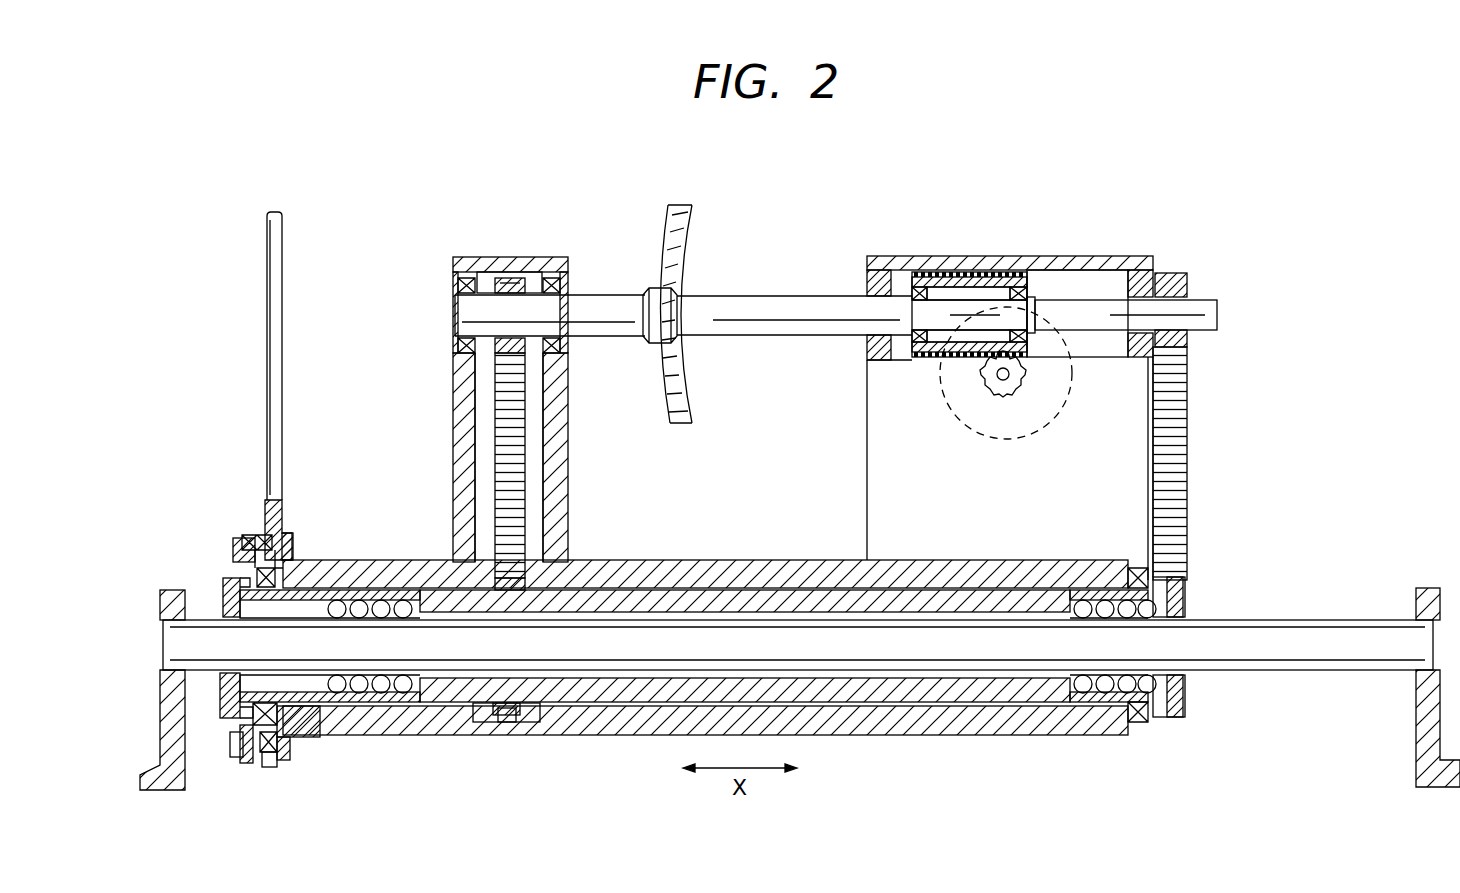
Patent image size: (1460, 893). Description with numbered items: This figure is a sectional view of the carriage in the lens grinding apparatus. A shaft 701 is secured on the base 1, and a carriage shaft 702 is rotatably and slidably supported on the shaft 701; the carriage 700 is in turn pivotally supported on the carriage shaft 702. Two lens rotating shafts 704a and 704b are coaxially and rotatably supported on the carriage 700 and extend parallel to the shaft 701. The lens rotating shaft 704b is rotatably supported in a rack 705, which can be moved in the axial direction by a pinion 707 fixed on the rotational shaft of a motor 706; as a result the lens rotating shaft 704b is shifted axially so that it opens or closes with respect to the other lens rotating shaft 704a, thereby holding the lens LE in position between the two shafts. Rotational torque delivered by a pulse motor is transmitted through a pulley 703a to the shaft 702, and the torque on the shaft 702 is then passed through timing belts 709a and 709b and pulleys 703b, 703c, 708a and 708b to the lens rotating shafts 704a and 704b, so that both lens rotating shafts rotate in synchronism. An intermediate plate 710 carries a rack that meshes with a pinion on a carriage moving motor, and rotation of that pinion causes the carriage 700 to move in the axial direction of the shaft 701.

The base 1 is at (170, 590).
The carriage 700 is at (1082, 256).
The shaft 701 is at (1316, 627).
The carriage shaft 702 is at (1158, 597).
The pulley 703a is at (225, 705).
The pulley 703b is at (1172, 717).
The pulley 703c is at (513, 722).
The lens rotating shaft 704a is at (593, 293).
The lens rotating shaft 704b is at (763, 296).
The rack 705 is at (941, 272).
The motor 706 is at (942, 362).
The pinion 707 is at (990, 396).
The pulley 708a is at (512, 278).
The pulley 708b is at (1170, 277).
The timing belt 709a is at (453, 447).
The timing belt 709b is at (1170, 425).
The intermediate plate 710 is at (274, 258).
The lens LE is at (678, 205).